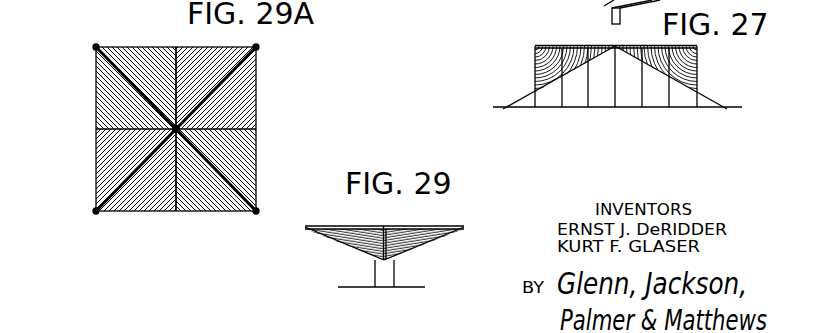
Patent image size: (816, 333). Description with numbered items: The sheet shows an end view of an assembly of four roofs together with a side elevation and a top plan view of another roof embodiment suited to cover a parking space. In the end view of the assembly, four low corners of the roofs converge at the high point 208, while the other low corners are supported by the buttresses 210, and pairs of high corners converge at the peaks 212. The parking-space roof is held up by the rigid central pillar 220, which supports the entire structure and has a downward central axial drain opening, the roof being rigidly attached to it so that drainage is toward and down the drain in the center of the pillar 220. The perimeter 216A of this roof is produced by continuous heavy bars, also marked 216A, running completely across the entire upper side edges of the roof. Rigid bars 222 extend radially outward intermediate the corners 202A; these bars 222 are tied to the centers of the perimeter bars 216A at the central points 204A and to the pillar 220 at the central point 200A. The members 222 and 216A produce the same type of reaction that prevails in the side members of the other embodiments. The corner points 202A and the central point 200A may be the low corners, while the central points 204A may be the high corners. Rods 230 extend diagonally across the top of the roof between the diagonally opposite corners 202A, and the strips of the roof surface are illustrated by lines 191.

In FIG. 29A, the central point 200A is at (167, 131).
In FIG. 29, the central point 200A is at (382, 258).
In FIG. 29A, the corner points 202A is at (96, 47).
In FIG. 29, the corner points 202A is at (305, 228).
In FIG. 29A, the central points 204A is at (176, 62).
In FIG. 29, the central points 204A is at (385, 226).
In FIG. 29A, the perimeter 216A is at (96, 150).
In FIG. 29, the perimeter 216A is at (327, 226).
In FIG. 29A, the rigid bars 222 is at (178, 68).
In FIG. 29, the rigid bars 222 is at (351, 242).
In FIG. 29A, the rods 230 is at (130, 178).
In FIG. 29A, the lines 191 is at (250, 160).
In FIG. 27, the lines 191 is at (556, 5).
In FIG. 29, the rigid central pillar 220 is at (403, 277).
In FIG. 27, the high point 208 is at (619, 36).
In FIG. 29A, the buttresses 210 is at (261, 4).
In FIG. 27, the buttresses 210 is at (522, 98).
In FIG. 29A, the peaks 212 is at (91, 4).
In FIG. 27, the peaks 212 is at (535, 48).